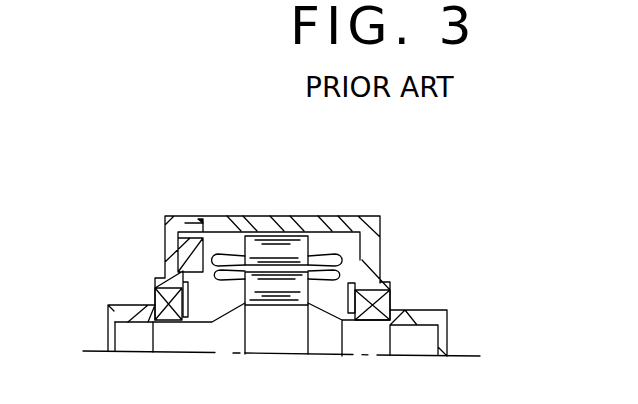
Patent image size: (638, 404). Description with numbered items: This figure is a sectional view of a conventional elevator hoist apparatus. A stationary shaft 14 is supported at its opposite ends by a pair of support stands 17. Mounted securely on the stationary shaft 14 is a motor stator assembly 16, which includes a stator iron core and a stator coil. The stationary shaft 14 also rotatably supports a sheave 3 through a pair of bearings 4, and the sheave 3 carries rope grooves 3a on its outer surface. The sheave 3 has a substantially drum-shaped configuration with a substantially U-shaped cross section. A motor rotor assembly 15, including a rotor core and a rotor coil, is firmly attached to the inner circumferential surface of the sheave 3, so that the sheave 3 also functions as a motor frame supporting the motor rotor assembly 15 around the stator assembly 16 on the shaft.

The sheave 3 is at (302, 218).
The rope grooves 3a is at (275, 250).
The bearings 4 is at (383, 288).
The stationary shaft 14 is at (130, 337).
The motor rotor assembly 15 is at (218, 252).
The motor stator assembly 16 is at (336, 262).
The support stands 17 is at (122, 305).